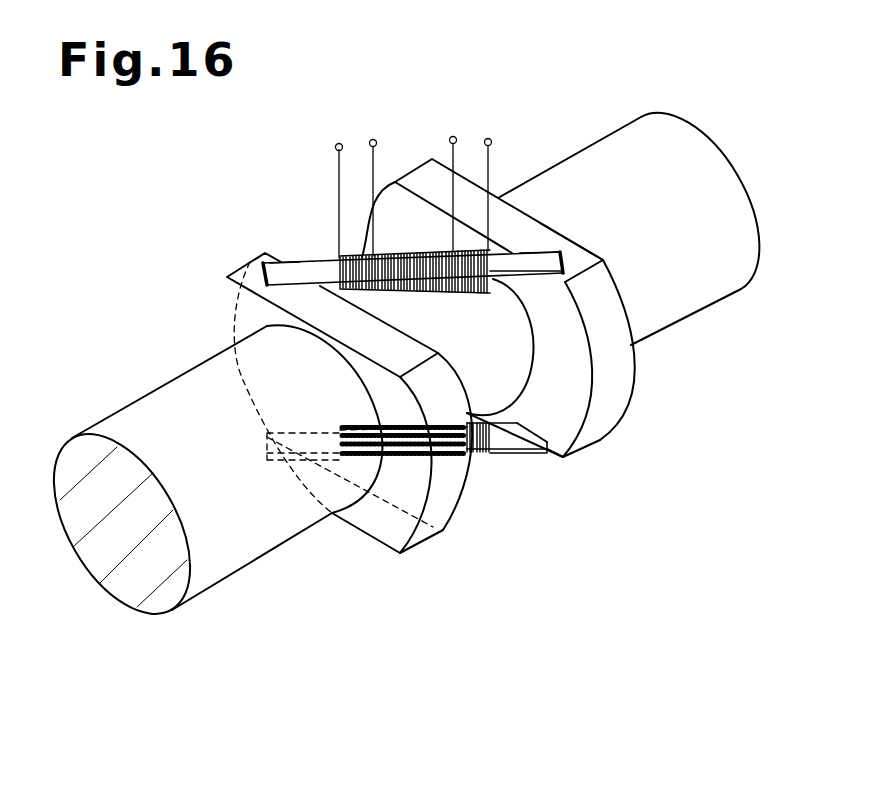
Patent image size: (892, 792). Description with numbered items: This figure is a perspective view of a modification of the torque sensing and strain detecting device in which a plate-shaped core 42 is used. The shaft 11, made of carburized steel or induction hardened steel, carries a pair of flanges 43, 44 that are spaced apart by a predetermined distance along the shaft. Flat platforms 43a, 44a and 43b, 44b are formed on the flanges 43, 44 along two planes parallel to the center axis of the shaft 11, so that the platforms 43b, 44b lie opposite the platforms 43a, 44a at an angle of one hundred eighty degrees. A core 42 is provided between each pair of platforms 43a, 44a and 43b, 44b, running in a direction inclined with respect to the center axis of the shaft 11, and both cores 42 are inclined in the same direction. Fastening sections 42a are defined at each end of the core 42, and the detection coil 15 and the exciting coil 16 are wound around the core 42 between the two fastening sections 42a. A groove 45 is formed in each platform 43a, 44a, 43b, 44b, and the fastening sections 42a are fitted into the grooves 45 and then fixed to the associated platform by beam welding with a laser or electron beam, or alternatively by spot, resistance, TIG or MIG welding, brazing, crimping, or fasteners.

The shaft 11 is at (148, 412).
The detection coil 15 is at (327, 265).
The exciting coil 16 is at (410, 252).
The core 42 is at (520, 279).
The fastening section 42a is at (290, 263).
The flange 43 is at (349, 435).
The flat platform 43a is at (337, 323).
The flat platform 43b is at (345, 523).
The flange 44 is at (519, 342).
The flat platform 44a is at (583, 253).
The flat platform 44b is at (555, 460).
The groove 45 is at (265, 258).